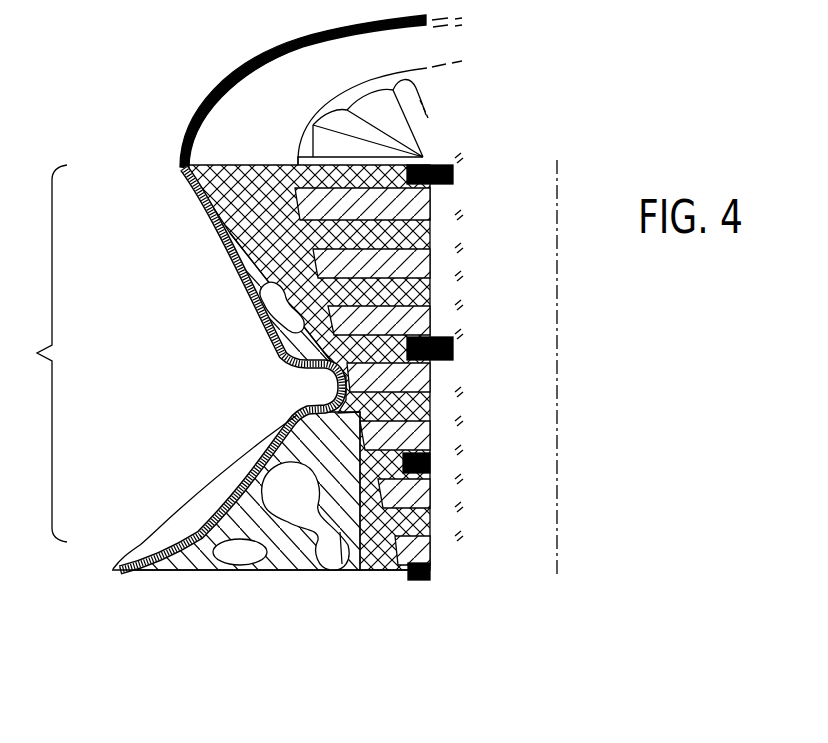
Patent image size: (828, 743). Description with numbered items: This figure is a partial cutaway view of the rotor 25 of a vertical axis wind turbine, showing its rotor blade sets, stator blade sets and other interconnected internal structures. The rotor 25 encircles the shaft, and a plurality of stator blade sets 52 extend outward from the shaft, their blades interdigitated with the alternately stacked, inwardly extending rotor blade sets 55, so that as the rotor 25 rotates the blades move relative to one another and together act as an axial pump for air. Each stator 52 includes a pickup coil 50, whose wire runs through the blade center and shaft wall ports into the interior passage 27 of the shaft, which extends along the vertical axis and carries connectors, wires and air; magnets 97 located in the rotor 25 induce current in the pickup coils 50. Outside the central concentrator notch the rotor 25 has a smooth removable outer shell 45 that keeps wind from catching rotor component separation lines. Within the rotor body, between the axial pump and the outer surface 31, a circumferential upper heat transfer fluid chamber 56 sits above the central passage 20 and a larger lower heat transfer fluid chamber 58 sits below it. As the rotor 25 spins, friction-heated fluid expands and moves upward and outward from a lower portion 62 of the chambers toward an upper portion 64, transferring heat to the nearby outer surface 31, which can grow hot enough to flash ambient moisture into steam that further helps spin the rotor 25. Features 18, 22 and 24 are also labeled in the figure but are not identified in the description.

The first portion 18 is at (160, 284).
The central passage 20 is at (178, 383).
The groove 22 is at (300, 371).
The base portion 24 is at (170, 533).
The rotor 25 is at (36, 353).
The interior passage 27 is at (516, 563).
The outer surface 31 is at (193, 181).
The removable outer shell 45 is at (228, 88).
The pickup coil 50 is at (450, 168).
The stator blade set 52 is at (433, 203).
The rotor blade set 55 is at (434, 230).
The upper heat transfer fluid chamber 56 is at (259, 292).
The lower heat transfer fluid chamber 58 is at (344, 536).
The lower portion 62 is at (263, 316).
The upper portion 64 is at (228, 233).
The magnets 97 is at (425, 150).